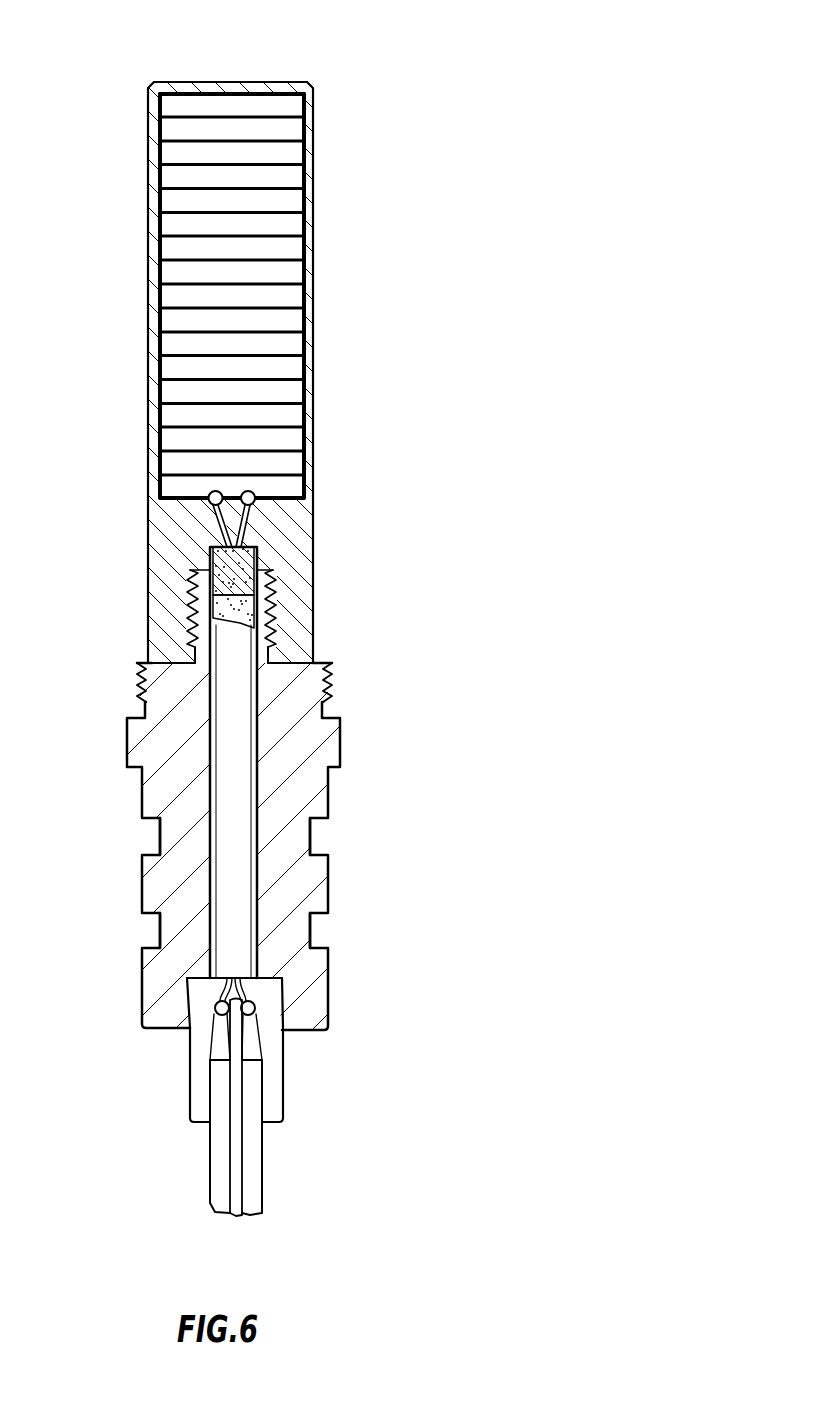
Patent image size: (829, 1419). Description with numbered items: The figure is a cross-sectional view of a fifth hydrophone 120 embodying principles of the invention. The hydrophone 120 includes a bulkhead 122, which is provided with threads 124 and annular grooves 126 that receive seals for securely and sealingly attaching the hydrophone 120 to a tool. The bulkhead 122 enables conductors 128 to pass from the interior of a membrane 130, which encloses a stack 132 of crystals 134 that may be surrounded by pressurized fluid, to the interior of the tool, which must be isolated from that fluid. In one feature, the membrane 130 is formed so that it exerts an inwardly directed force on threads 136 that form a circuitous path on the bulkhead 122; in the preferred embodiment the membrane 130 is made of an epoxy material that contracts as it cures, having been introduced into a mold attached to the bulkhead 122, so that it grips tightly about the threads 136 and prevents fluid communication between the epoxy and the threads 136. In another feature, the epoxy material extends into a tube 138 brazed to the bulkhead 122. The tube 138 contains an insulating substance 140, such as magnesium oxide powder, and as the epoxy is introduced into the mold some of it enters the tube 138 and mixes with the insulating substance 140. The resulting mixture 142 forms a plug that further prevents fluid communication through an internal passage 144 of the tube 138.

The hydrophone 120 is at (492, 113).
The bulkhead 122 is at (342, 738).
The threads 124 is at (330, 683).
The annular grooves 126 is at (311, 836).
The conductors 128 is at (176, 504).
The membrane 130 is at (315, 418).
The stack 132 is at (246, 90).
The crystals 134 is at (283, 235).
The threads 136 is at (280, 614).
The tube 138 is at (256, 556).
The insulating substance 140 is at (212, 606).
The mixture 142 is at (212, 562).
The internal passage 144 is at (262, 585).